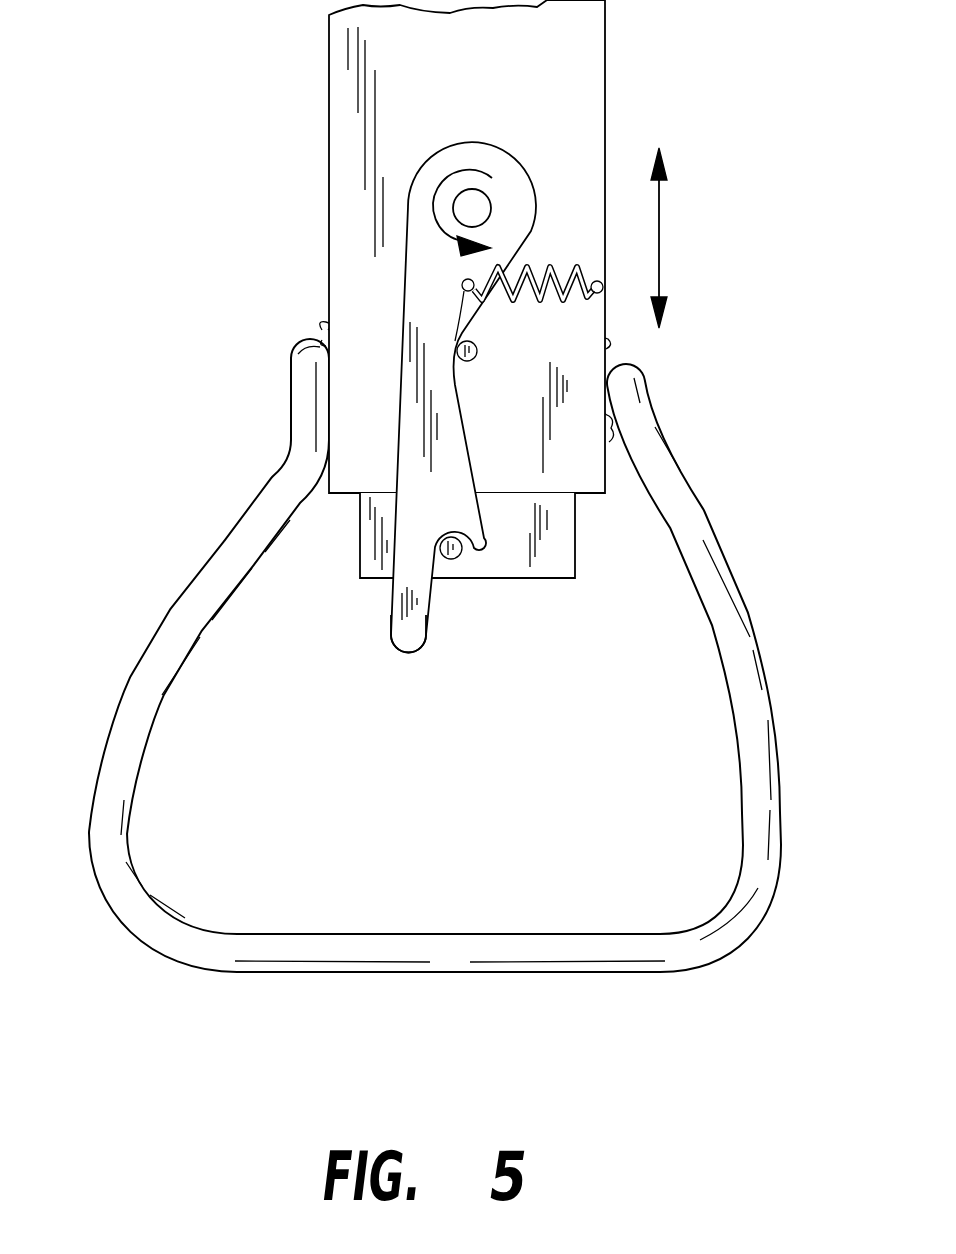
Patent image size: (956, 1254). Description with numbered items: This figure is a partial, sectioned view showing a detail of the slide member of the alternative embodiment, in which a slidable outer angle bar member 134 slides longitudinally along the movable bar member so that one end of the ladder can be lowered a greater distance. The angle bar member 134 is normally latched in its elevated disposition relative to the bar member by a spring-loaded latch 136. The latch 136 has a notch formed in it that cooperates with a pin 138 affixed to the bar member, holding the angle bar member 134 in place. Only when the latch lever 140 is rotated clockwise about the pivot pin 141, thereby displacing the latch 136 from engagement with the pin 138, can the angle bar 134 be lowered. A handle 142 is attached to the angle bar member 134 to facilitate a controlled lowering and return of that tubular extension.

The angle bar member 134 is at (345, 134).
The spring-loaded latch 136 is at (418, 300).
The pin 138 is at (450, 558).
The latch lever 140 is at (392, 630).
The pivot pin 141 is at (486, 196).
The handle 142 is at (677, 963).